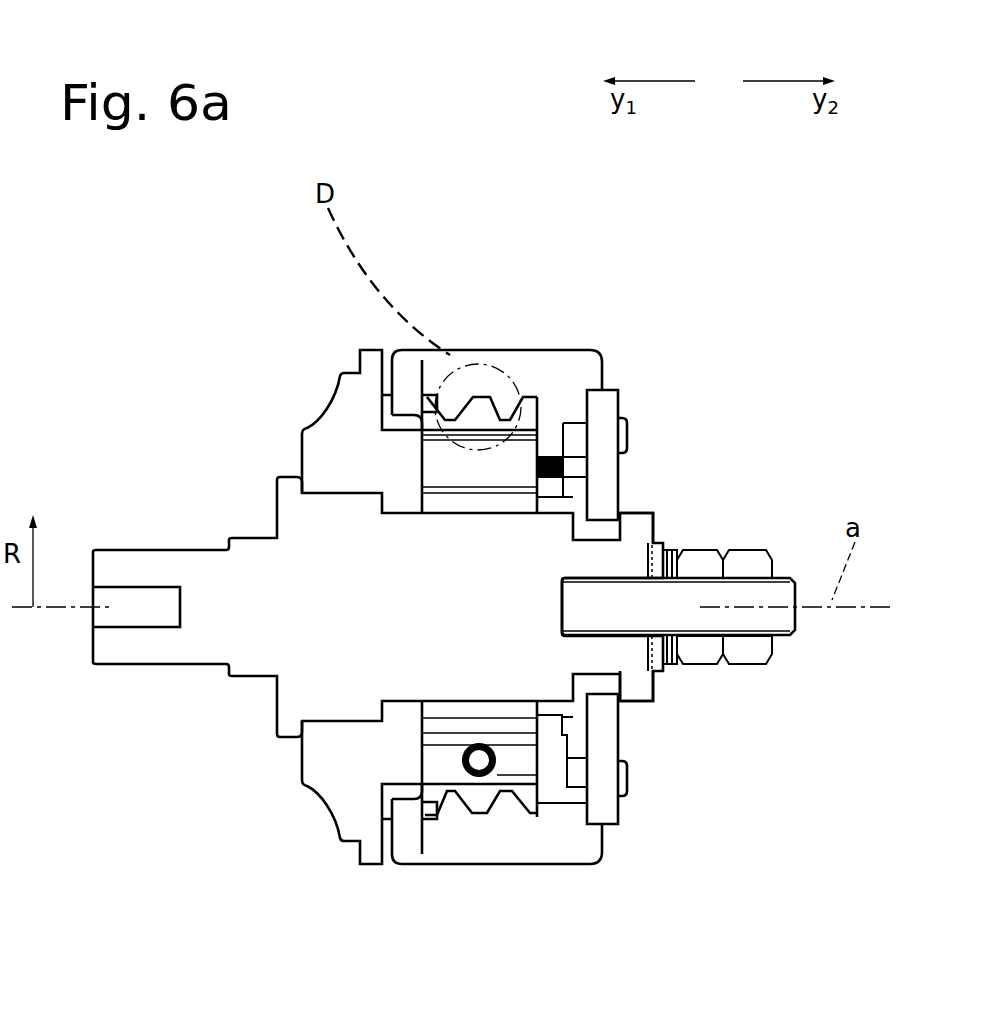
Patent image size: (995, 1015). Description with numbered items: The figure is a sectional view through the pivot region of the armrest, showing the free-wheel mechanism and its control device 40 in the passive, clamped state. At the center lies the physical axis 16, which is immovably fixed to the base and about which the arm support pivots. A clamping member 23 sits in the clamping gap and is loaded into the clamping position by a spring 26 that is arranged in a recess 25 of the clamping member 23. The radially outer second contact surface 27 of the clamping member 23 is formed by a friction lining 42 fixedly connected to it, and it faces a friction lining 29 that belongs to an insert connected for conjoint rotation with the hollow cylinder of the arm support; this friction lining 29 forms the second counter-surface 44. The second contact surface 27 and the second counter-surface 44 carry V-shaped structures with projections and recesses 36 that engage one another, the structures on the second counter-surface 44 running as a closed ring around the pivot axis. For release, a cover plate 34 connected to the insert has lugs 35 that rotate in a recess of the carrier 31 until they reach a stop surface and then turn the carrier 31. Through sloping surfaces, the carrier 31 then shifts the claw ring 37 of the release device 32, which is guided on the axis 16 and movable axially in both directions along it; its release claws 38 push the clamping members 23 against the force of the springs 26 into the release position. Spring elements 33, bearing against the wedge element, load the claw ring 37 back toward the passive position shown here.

The axis 16 is at (283, 647).
The clamping member 23 is at (450, 465).
The recess 25 is at (474, 784).
The spring 26 is at (497, 770).
The second contact surface 27 is at (453, 785).
The friction lining 29 is at (577, 362).
The carrier 31 is at (556, 452).
The release device 32 is at (603, 757).
The spring element 33 is at (605, 388).
The cover plate 34 is at (610, 488).
The lug 35 is at (583, 512).
The recess 36 is at (575, 520).
The claw ring 37 is at (573, 475).
The release claw 38 is at (580, 803).
The control device 40 is at (640, 736).
The friction lining 42 is at (426, 396).
The second counter-surface 44 is at (433, 780).